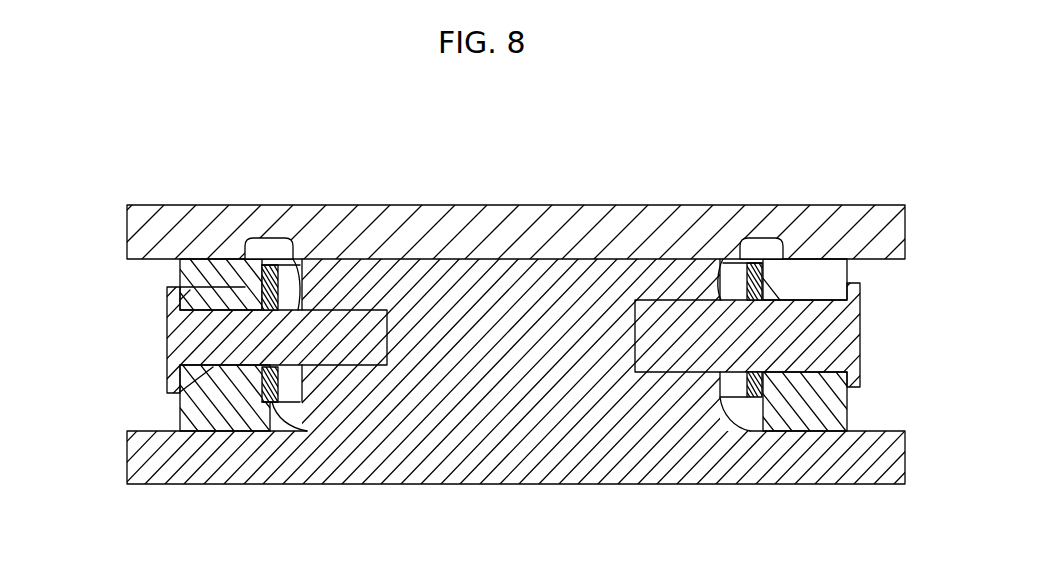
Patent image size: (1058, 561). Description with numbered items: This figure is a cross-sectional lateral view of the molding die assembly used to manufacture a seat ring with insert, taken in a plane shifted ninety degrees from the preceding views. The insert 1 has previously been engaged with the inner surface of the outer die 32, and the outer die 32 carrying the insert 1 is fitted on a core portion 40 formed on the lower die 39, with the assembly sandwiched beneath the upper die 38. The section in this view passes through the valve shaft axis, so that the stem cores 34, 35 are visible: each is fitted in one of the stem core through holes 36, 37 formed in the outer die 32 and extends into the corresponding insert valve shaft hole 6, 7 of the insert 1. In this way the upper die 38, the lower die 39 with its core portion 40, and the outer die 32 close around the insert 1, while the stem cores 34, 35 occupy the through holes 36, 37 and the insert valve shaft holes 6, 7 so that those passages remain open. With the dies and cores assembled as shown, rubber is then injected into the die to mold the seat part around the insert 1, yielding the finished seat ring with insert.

The insert 1 is at (296, 259).
The insert valve shaft hole 6 is at (767, 264).
The insert valve shaft hole 7 is at (177, 287).
The outer die 32 is at (840, 417).
The stem core 34 is at (860, 345).
The stem core 35 is at (175, 340).
The stem core through hole 36 is at (860, 288).
The stem core through hole 37 is at (167, 394).
The upper die 38 is at (653, 223).
The lower die 39 is at (365, 465).
The core portion 40 is at (500, 333).